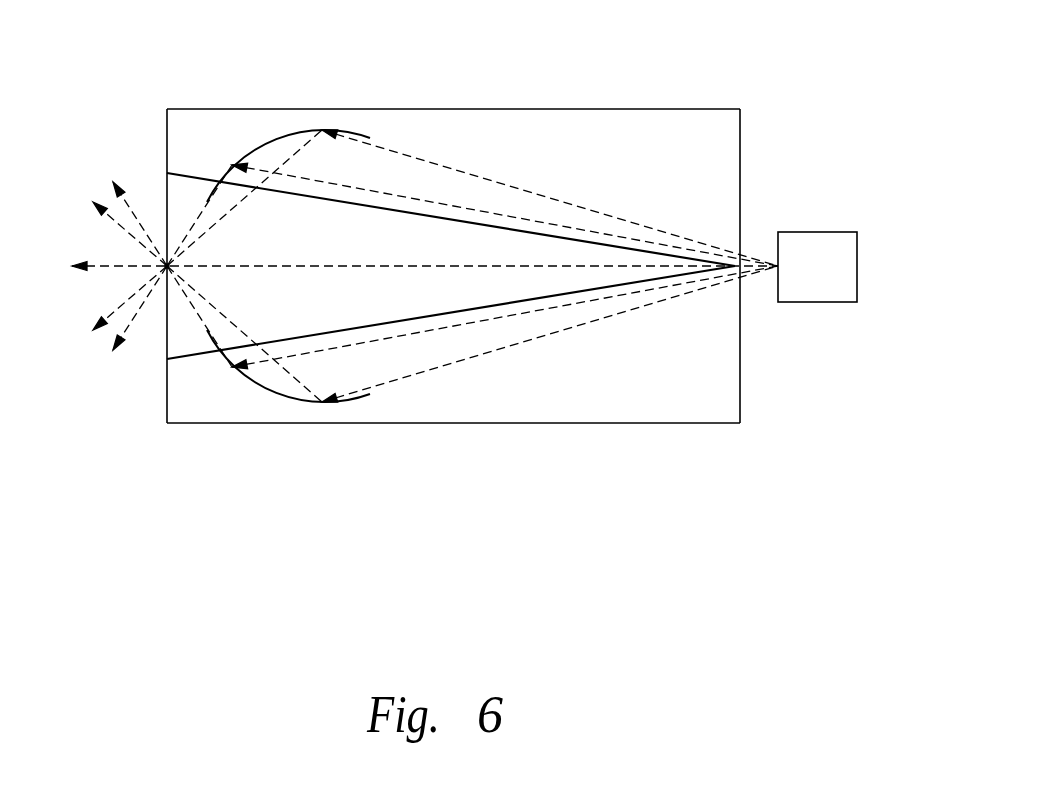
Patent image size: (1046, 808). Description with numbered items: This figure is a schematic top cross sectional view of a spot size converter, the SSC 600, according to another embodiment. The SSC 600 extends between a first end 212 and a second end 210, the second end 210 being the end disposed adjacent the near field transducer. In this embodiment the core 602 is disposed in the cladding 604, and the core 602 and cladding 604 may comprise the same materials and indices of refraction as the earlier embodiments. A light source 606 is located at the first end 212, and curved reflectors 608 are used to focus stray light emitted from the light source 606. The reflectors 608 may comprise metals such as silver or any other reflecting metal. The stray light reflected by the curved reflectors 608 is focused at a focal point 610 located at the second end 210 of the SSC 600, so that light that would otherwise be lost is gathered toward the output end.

The SSC 600 is at (609, 51).
The second end 210 is at (167, 133).
The first end 212 is at (740, 133).
The core 602 is at (287, 248).
The cladding 604 is at (600, 170).
The light source 606 is at (798, 283).
The curved reflectors 608 is at (250, 152).
The focal point 610 is at (168, 267).